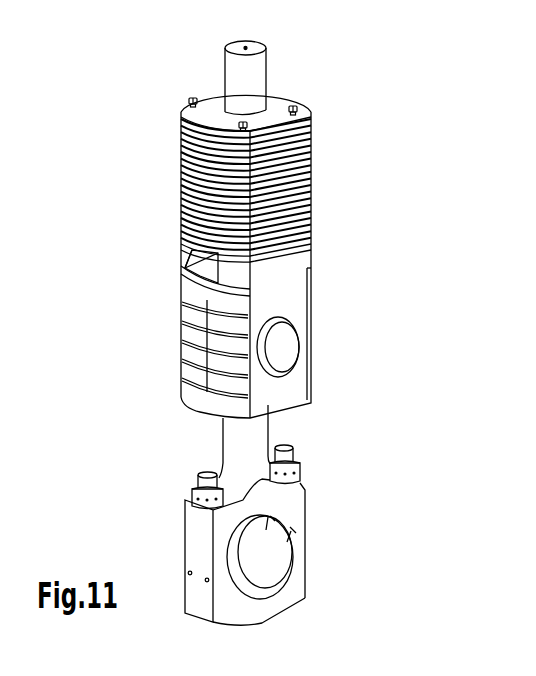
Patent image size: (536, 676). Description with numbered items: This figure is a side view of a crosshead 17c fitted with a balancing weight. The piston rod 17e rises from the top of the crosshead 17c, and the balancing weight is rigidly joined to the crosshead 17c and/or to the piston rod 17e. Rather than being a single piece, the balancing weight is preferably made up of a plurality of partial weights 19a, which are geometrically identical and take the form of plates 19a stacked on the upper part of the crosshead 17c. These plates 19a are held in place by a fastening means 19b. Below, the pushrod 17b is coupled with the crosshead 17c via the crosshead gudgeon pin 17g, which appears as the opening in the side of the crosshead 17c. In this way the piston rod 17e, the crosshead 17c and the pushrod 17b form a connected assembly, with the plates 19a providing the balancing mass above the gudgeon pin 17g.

The piston rod 17e is at (266, 72).
The fastening means 19b is at (190, 100).
The plates 19a is at (300, 210).
The crosshead 17c is at (285, 260).
The crosshead gudgeon pin 17g is at (280, 338).
The pushrod 17b is at (252, 440).